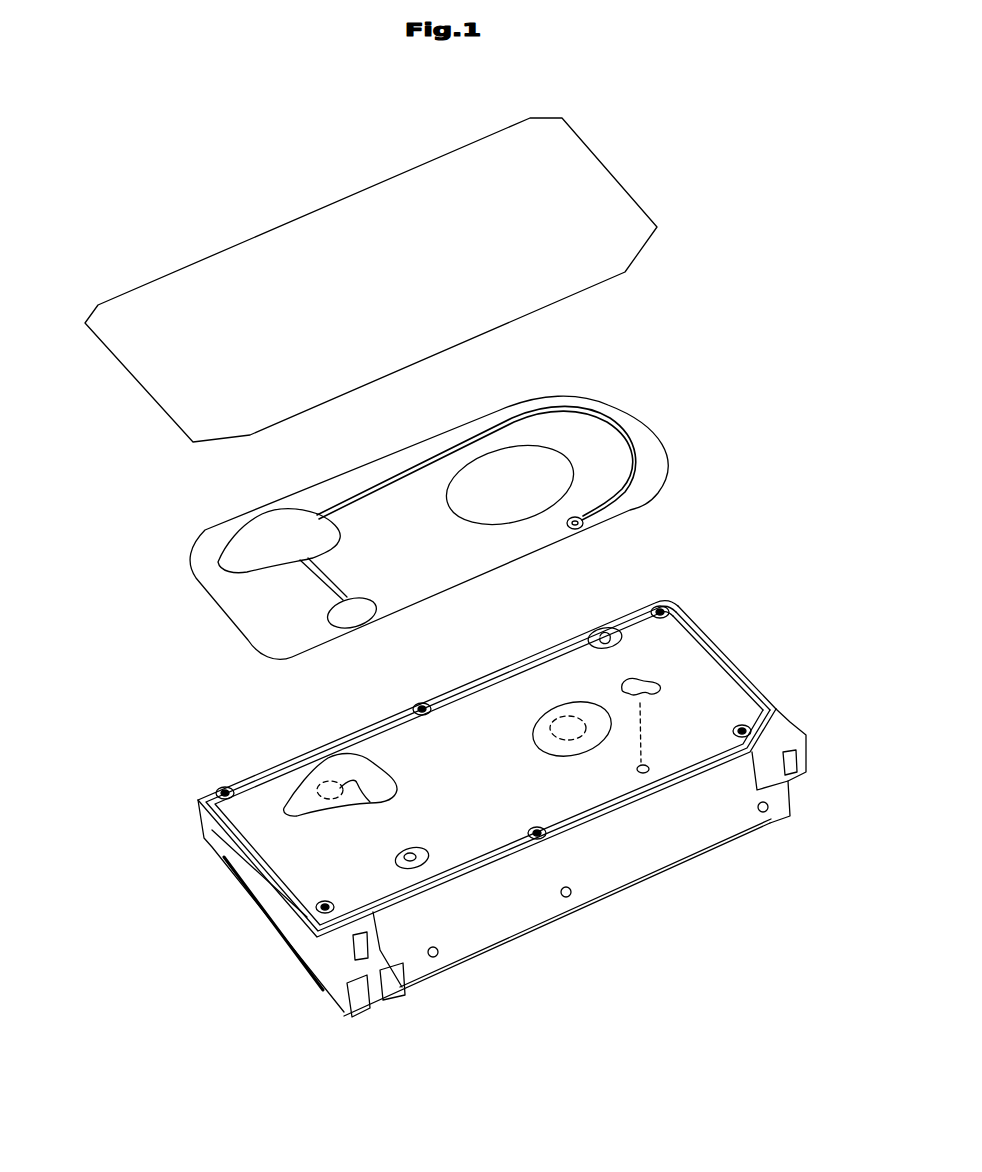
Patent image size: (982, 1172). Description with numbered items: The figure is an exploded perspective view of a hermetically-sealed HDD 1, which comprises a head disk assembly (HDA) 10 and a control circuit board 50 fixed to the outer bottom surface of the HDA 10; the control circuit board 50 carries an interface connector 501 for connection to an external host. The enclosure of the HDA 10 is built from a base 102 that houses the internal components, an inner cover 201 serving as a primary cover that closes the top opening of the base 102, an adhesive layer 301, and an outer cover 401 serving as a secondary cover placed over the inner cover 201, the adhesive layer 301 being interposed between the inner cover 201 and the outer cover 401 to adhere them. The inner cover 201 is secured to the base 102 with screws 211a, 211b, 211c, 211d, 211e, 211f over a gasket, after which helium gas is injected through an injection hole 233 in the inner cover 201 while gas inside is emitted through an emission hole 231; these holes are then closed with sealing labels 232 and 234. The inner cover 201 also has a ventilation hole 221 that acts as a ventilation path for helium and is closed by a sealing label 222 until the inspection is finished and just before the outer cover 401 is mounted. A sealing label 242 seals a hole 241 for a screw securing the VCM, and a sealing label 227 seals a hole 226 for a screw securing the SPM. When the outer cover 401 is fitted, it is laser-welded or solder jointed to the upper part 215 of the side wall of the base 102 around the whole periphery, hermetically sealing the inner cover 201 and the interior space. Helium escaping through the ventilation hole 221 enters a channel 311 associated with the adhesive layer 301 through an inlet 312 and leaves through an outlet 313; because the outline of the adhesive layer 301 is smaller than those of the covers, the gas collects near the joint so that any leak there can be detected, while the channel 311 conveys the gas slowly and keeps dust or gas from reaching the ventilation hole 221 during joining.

The hermetically-sealed HDD 1 is at (175, 141).
The head disk assembly 10 is at (758, 285).
The outer cover 401 is at (603, 163).
The adhesive layer 301 is at (662, 452).
The channel 311 is at (590, 417).
The inlet 312 is at (578, 530).
The outlet 313 is at (363, 627).
The inner cover 201 is at (287, 833).
The upper part of the side wall of the base 215 is at (723, 652).
The screw 211a is at (222, 790).
The screw 211b is at (420, 704).
The screw 211c is at (658, 607).
The screw 211d is at (741, 727).
The screw 211e is at (535, 829).
The screw 211f is at (323, 903).
The sealing label 242 is at (360, 757).
The hole for a screw to secure the VCM 241 is at (370, 802).
The emission hole 231 is at (403, 855).
The sealing label 232 is at (422, 847).
The sealing label 227 is at (533, 727).
The hole for a screw to secure the SPM 226 is at (572, 740).
The injection hole 233 is at (600, 648).
The sealing label 234 is at (623, 637).
The sealing label 222 is at (653, 690).
The ventilation hole 221 is at (648, 766).
The control circuit board 50 is at (597, 903).
The base 102 is at (660, 845).
The interface connector 501 is at (357, 1017).